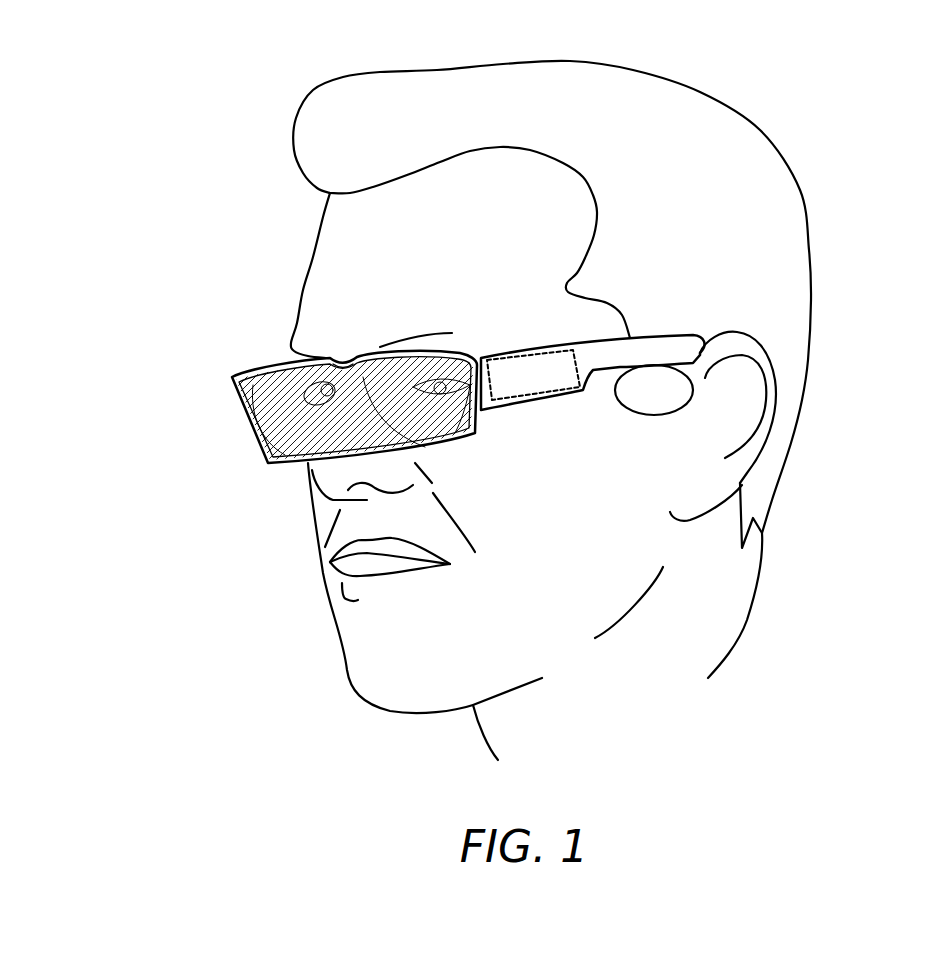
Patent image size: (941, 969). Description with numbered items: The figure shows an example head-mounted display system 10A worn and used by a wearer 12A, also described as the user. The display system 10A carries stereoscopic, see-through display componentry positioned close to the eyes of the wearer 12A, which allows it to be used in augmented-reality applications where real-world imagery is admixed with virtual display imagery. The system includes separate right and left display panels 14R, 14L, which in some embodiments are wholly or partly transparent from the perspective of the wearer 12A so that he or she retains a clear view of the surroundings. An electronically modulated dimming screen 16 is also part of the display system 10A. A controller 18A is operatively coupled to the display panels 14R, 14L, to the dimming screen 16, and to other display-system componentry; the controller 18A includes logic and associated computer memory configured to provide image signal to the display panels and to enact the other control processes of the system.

The head-mounted display system 10A is at (208, 413).
The wearer 12A is at (877, 146).
The right display panel 14R is at (267, 427).
The left display panel 14L is at (437, 427).
The electronically modulated dimming screen 16 is at (343, 363).
The controller 18A is at (549, 386).